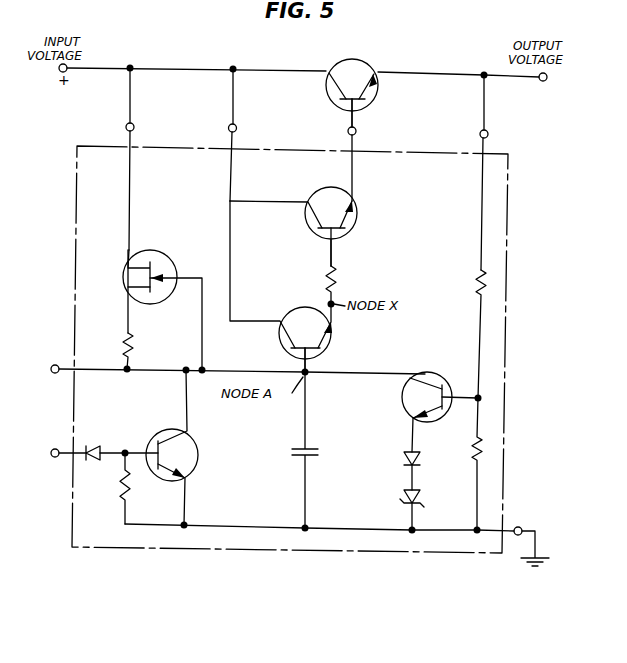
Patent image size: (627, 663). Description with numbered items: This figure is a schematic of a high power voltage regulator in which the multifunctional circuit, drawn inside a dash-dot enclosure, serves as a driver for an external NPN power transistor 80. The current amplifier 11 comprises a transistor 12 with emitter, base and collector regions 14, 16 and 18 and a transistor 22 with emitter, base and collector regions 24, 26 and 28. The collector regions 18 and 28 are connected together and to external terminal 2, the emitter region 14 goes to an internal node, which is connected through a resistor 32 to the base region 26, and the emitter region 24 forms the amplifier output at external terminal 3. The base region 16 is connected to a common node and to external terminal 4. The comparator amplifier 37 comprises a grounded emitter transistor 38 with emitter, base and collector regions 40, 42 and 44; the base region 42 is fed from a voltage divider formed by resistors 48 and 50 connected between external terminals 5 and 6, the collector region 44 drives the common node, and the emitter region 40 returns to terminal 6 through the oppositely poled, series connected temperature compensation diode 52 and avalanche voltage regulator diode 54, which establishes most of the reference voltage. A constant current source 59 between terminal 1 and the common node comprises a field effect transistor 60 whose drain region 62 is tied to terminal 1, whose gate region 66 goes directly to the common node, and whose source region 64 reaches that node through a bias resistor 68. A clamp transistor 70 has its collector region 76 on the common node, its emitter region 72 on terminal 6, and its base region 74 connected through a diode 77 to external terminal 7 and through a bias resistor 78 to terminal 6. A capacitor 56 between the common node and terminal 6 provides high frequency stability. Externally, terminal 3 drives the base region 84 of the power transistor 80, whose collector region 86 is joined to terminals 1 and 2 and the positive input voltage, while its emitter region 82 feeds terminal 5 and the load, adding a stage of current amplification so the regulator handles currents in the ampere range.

The external terminal 1 is at (136, 159).
The external terminal 2 is at (239, 135).
The external terminal 3 is at (358, 150).
The external terminal 4 is at (237, 362).
The external terminal 5 is at (489, 172).
The external terminal 6 is at (531, 539).
The external terminal 7 is at (68, 446).
The current amplifier 11 is at (418, 235).
The transistor 12 is at (325, 358).
The emitter region 14 is at (340, 336).
The base region 16 is at (300, 366).
The collector region 18 is at (280, 334).
The transistor 22 is at (343, 233).
The emitter region 24 is at (357, 215).
The base region 26 is at (330, 256).
The collector region 28 is at (307, 217).
The resistor 32 is at (326, 281).
The comparator amplifier 37 is at (416, 343).
The transistor 38 is at (444, 381).
The emitter region 40 is at (411, 418).
The base region 42 is at (459, 400).
The collector region 44 is at (425, 375).
The resistor 48 is at (471, 281).
The resistor 50 is at (473, 446).
The temperature compensation diode 52 is at (404, 461).
The voltage regulator diode 54 is at (403, 496).
The capacitor 56 is at (296, 458).
The constant current source 59 is at (166, 236).
The field effect transistor 60 is at (165, 259).
The drain region 62 is at (131, 198).
The source region 64 is at (136, 292).
The gate region 66 is at (200, 314).
The bias resistor 68 is at (136, 343).
The clamp transistor 70 is at (158, 437).
The emitter region 72 is at (178, 481).
The base region 74 is at (136, 452).
The collector region 76 is at (193, 440).
The diode 77 is at (95, 446).
The bias resistor 78 is at (119, 490).
The NPN power transistor 80 is at (371, 101).
The emitter region 82 is at (380, 85).
The base region 84 is at (350, 112).
The collector region 86 is at (330, 88).